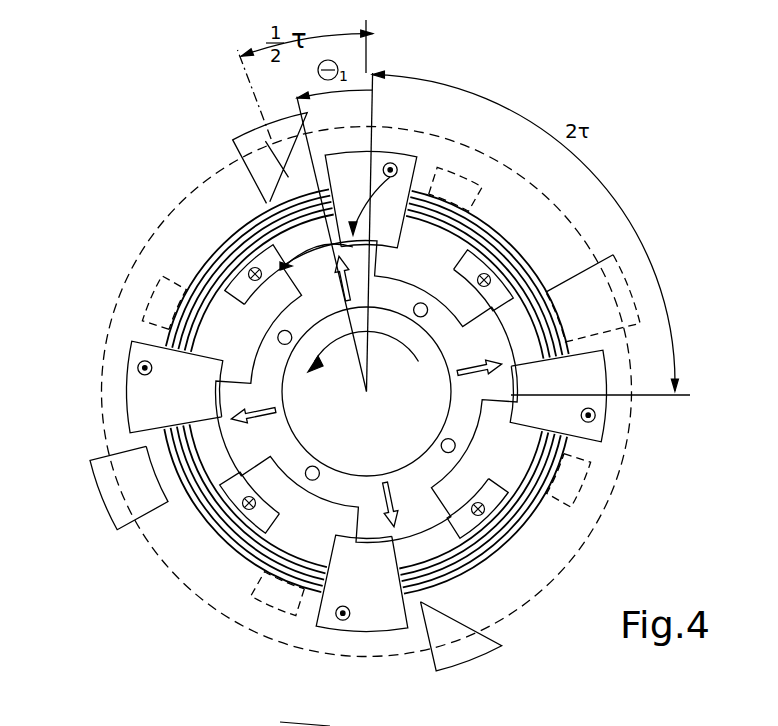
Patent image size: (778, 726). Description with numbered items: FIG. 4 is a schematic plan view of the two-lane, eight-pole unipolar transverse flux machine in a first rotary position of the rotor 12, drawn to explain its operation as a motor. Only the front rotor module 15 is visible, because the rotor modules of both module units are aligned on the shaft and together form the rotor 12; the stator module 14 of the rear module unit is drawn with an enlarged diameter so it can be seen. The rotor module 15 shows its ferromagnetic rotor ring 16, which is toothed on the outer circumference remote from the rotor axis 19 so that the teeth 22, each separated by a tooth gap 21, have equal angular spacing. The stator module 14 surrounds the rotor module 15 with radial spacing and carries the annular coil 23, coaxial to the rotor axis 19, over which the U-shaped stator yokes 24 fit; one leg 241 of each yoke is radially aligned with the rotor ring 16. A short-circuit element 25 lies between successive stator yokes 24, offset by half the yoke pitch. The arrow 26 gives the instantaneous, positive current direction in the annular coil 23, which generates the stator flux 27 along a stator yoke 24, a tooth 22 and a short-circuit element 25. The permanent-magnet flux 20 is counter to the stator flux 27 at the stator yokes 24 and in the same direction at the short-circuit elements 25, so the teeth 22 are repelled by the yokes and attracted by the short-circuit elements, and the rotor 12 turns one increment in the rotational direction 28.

The rotor 12 is at (327, 512).
The stator module 14 is at (140, 548).
The rotor module 15 is at (310, 500).
The rotor ring 16 is at (462, 427).
The rotor axis 19 is at (365, 393).
The magnetic flux 20 is at (613, 254).
The tooth gap 21 is at (463, 465).
The tooth 22 is at (410, 502).
The annular coil 23 is at (218, 247).
The stator yoke 24 is at (580, 379).
The leg of the yoke 241 is at (548, 410).
The short-circuit element 25 is at (140, 305).
The arrow 26 is at (531, 127).
The stator flux 27 is at (353, 222).
The rotational direction 28 is at (405, 354).